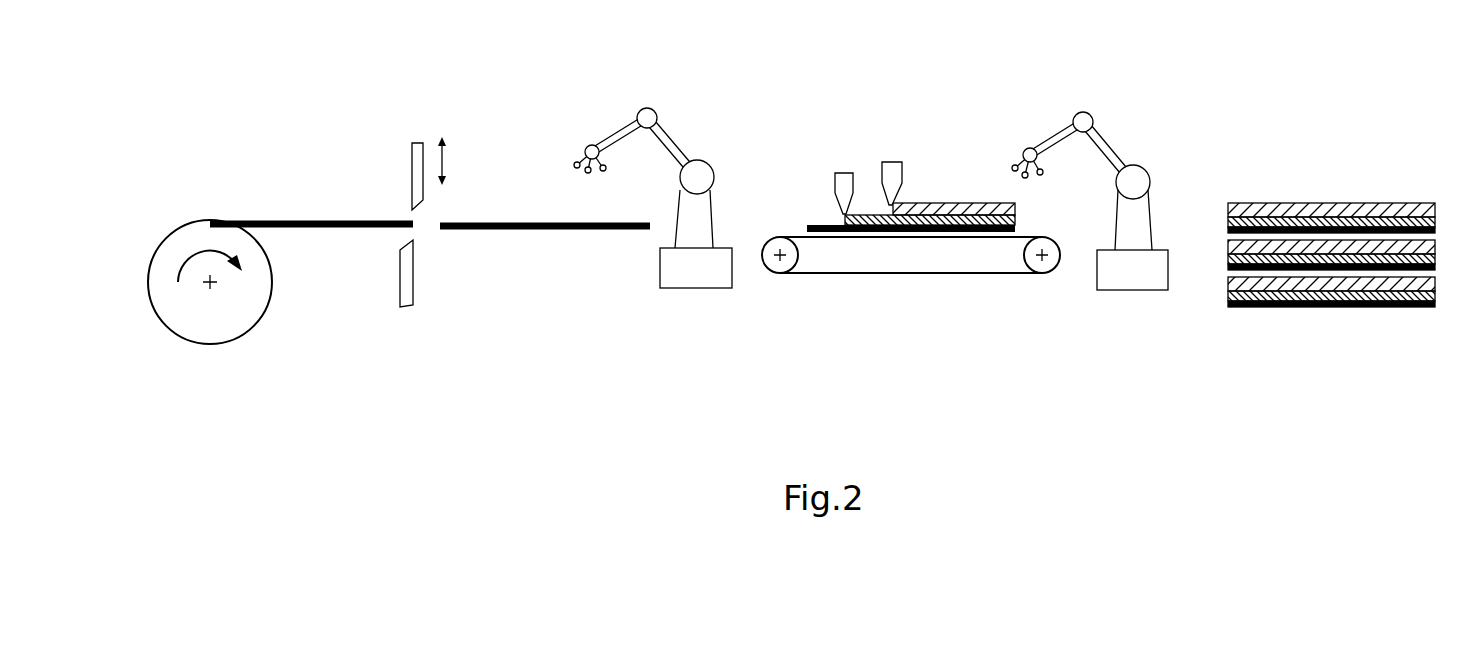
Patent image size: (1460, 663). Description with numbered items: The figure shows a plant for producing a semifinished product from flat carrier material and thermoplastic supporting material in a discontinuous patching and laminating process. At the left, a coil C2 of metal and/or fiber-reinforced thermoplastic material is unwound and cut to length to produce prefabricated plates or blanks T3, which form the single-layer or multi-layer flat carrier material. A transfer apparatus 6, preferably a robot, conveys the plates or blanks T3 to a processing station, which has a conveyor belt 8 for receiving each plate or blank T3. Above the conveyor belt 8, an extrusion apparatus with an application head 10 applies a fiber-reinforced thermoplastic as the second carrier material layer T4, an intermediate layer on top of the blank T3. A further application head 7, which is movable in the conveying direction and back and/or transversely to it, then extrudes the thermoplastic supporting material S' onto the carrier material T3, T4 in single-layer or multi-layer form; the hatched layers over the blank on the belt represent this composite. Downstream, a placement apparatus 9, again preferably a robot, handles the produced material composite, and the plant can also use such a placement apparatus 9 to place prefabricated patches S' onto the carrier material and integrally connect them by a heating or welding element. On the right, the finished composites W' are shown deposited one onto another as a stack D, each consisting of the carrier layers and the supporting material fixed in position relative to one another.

The coil C2 is at (222, 322).
The plate or blank T3 is at (503, 223).
The transfer apparatus 6 is at (697, 170).
The application head 10 is at (843, 175).
The second carrier material layer T4 is at (870, 215).
The application head 7 is at (892, 165).
The thermoplastic supporting material S' is at (954, 166).
The conveyor belt 8 is at (807, 275).
The placement apparatus 9 is at (1135, 175).
The stack of laminated workpieces W' is at (1331, 209).
The stacking / deposit station D is at (1230, 257).